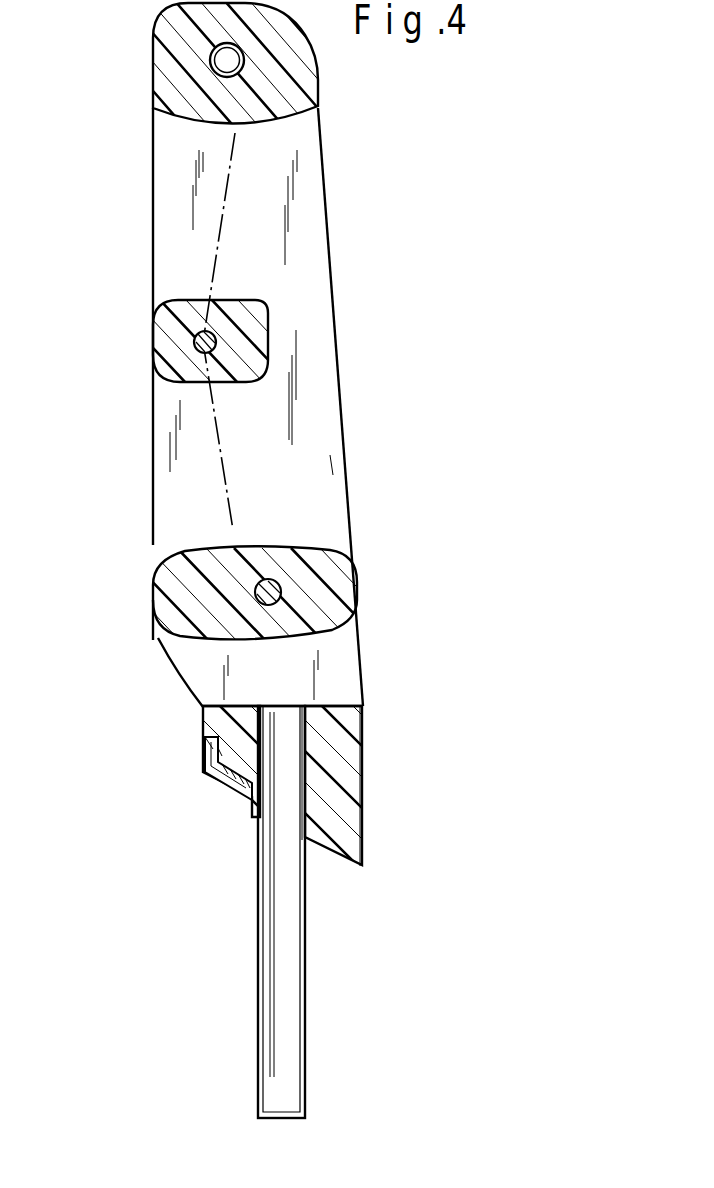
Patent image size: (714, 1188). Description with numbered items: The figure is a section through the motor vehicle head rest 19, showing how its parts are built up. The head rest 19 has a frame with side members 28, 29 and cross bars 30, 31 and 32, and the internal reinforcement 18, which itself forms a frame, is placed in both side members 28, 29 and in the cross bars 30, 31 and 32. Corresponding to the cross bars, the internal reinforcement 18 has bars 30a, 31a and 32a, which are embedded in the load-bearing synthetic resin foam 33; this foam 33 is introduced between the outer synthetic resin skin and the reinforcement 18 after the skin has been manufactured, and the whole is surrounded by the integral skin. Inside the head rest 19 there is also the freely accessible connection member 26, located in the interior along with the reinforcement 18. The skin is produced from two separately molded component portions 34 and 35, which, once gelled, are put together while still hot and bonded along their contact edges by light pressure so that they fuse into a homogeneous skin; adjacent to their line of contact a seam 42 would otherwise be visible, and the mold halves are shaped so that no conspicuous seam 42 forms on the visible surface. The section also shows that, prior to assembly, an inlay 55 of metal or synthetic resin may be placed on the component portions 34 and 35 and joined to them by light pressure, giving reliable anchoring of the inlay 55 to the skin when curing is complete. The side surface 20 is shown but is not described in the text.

The internal reinforcement 18 is at (311, 948).
The motor vehicle head rest 19 is at (342, 240).
The side surface 20 is at (268, 338).
The connection member 26 is at (290, 1050).
The side member 28 is at (323, 463).
The side member 29 is at (366, 768).
The cross bar 30 is at (322, 81).
The bar of the internal reinforcement 30a is at (208, 60).
The cross bar 31 is at (148, 323).
The bar of the internal reinforcement 31a is at (200, 346).
The cross bar 32 is at (148, 582).
The bar of the internal reinforcement 32a is at (255, 600).
The synthetic resin foam 33 is at (355, 598).
The component portion 34 is at (297, 158).
The component portion 35 is at (199, 163).
The seam 42 is at (218, 236).
The inlay 55 is at (203, 776).